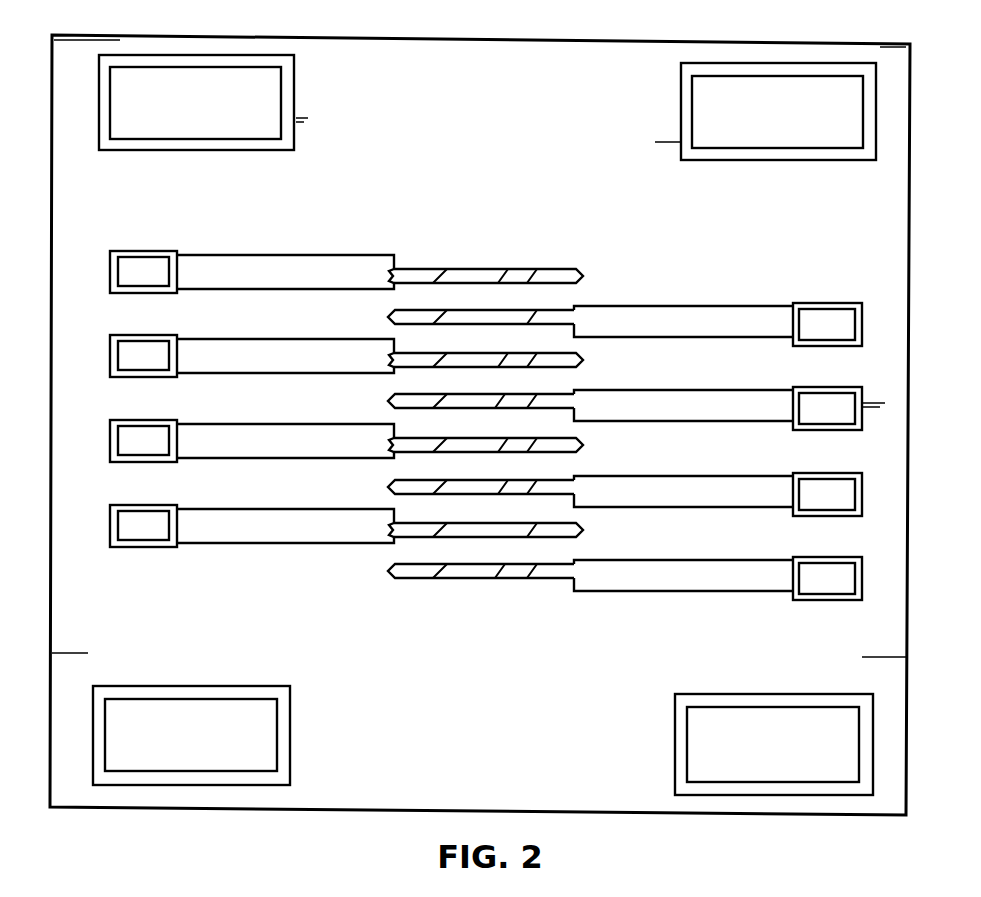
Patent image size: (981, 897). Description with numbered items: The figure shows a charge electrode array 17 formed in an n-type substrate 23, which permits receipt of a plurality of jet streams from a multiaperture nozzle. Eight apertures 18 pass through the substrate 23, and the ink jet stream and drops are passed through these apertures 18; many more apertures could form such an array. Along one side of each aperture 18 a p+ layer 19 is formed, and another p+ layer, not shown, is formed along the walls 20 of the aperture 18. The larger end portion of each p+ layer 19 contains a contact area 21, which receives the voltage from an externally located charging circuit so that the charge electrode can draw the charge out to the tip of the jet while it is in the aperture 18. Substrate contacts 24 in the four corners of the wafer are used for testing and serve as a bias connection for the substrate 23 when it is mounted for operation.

The charge electrode array 17 is at (513, 637).
The aperture 18 is at (460, 279).
The p+ layer 19 is at (284, 285).
The walls 20 is at (532, 271).
The contact area 21 is at (122, 346).
The n-type substrate 23 is at (58, 212).
The substrate contacts 24 is at (113, 85).